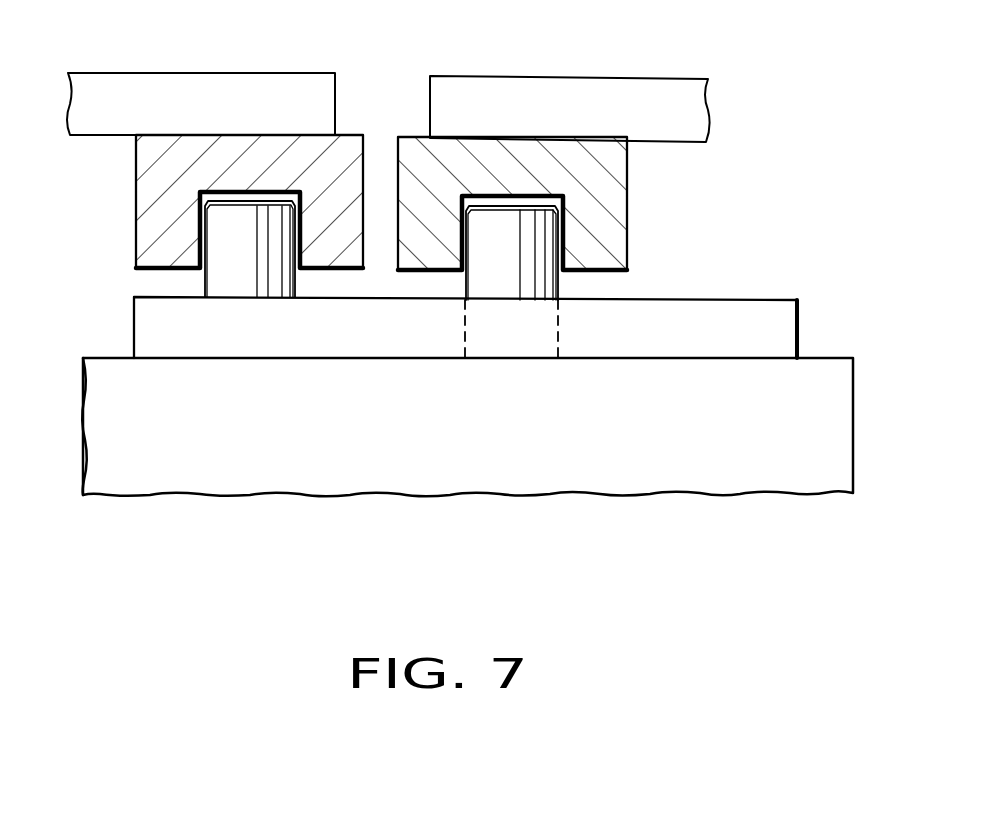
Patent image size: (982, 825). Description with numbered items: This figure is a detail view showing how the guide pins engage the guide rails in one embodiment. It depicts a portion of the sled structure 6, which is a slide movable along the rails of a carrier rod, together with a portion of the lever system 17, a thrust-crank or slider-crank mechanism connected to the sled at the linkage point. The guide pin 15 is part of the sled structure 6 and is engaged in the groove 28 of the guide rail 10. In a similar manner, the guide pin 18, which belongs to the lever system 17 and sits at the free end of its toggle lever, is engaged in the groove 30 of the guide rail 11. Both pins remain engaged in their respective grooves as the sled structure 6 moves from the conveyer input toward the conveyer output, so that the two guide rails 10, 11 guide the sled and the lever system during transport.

The sled structure 6 is at (797, 385).
The lever system 17 is at (715, 315).
The guide rail 11 is at (147, 240).
The guide rail 10 is at (628, 223).
The groove 30 is at (203, 202).
The groove 28 is at (558, 198).
The guide pin 18 is at (227, 278).
The guide pin 15 is at (528, 290).